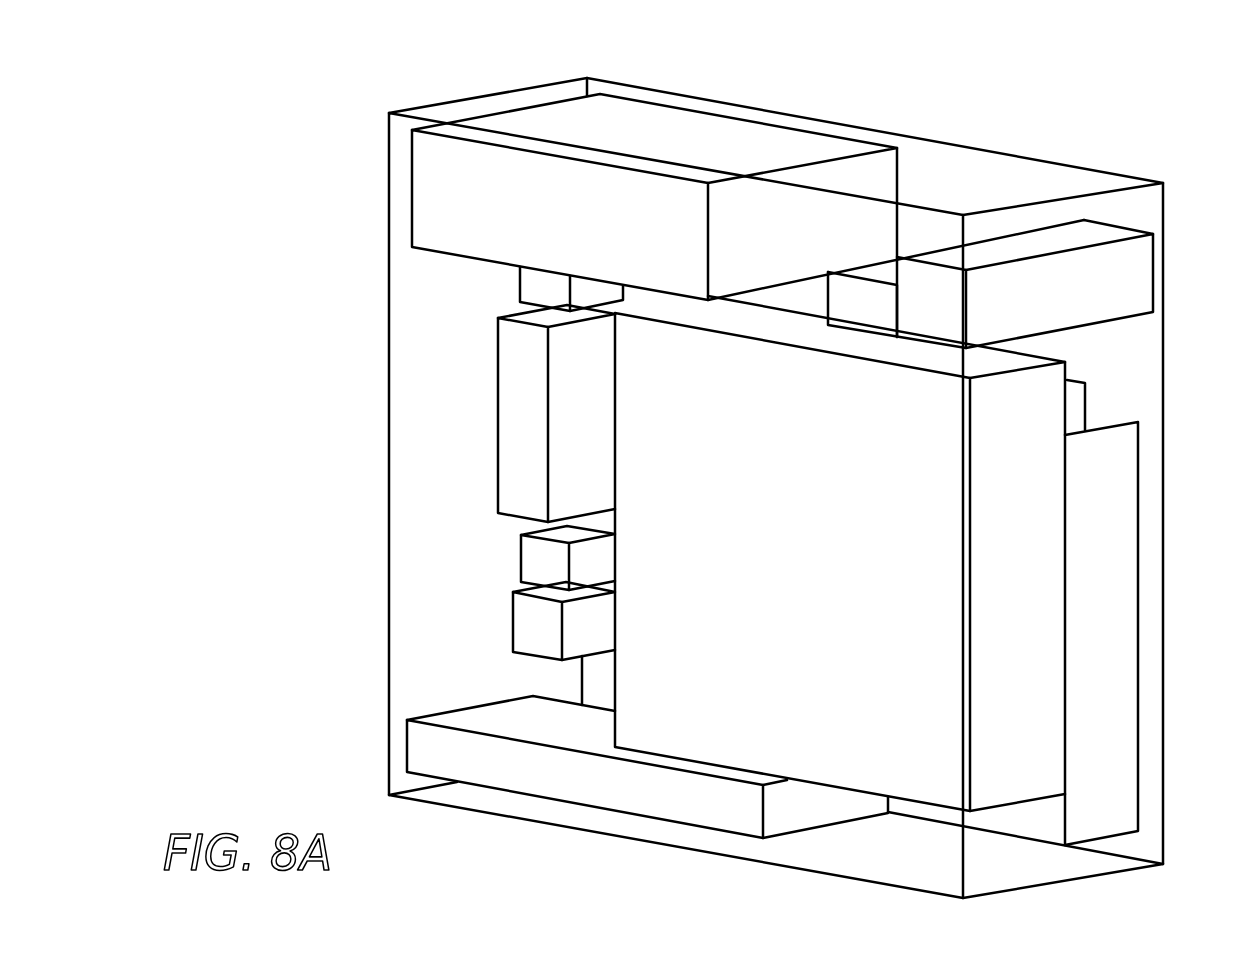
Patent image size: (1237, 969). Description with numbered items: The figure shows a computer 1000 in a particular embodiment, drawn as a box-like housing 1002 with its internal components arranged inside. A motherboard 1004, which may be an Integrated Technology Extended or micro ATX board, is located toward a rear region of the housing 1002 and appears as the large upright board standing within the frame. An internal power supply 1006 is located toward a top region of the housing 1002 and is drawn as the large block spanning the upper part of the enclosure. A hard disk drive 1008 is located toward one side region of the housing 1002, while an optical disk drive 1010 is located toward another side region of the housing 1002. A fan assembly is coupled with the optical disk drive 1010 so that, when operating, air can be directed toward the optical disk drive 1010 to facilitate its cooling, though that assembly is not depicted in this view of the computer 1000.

The computer 1000 is at (345, 86).
The housing 1002 is at (555, 95).
The motherboard 1004 is at (568, 427).
The internal power supply 1006 is at (688, 132).
The hard disk drive 1008 is at (1095, 795).
The optical disk drive 1010 is at (857, 727).